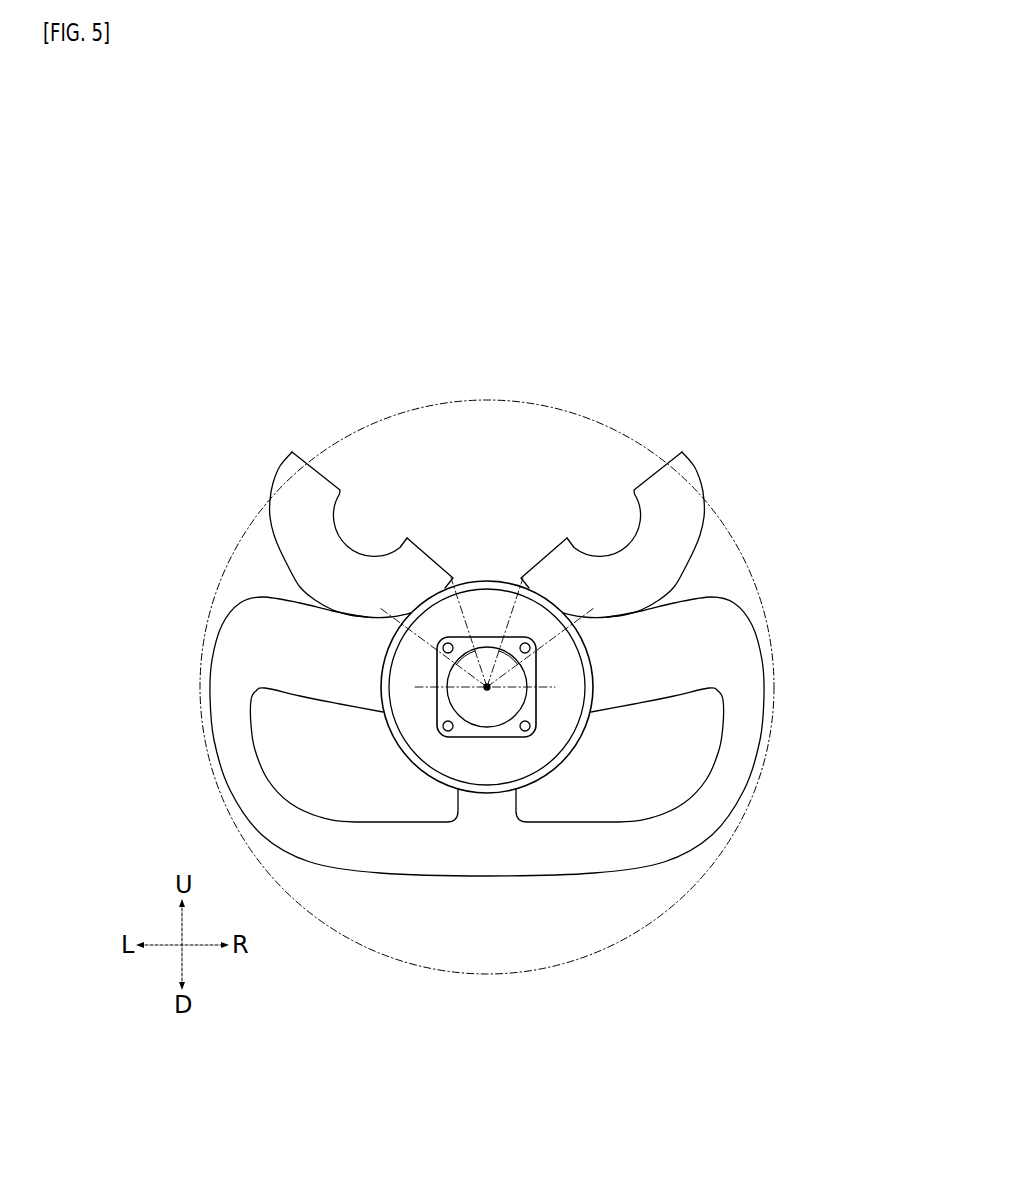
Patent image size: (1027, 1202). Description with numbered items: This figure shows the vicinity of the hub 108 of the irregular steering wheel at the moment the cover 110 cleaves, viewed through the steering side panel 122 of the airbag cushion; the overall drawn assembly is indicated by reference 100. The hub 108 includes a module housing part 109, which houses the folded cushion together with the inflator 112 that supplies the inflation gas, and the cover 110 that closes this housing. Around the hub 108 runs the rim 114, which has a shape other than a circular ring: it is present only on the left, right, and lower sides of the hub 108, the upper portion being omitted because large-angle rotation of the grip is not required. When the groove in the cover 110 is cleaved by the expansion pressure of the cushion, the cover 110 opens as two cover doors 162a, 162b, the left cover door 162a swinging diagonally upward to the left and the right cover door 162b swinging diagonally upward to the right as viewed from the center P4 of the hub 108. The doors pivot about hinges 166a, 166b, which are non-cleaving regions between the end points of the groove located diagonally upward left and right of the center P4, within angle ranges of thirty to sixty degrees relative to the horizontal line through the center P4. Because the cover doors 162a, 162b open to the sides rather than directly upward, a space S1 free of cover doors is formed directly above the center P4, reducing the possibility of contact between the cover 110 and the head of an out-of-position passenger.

The steering wheel 100 is at (293, 351).
The hub 108 is at (381, 692).
The module housing part 109 is at (423, 747).
The cover 110 is at (276, 479).
The inflator 112 is at (532, 717).
The rim 114 is at (738, 622).
The steering side panel 122 is at (748, 572).
The left cover door 162a is at (269, 506).
The right cover door 162b is at (701, 487).
The hinge 166a is at (414, 611).
The hinge 166b is at (558, 611).
The center of the hub P4 is at (487, 687).
The space S1 is at (496, 477).